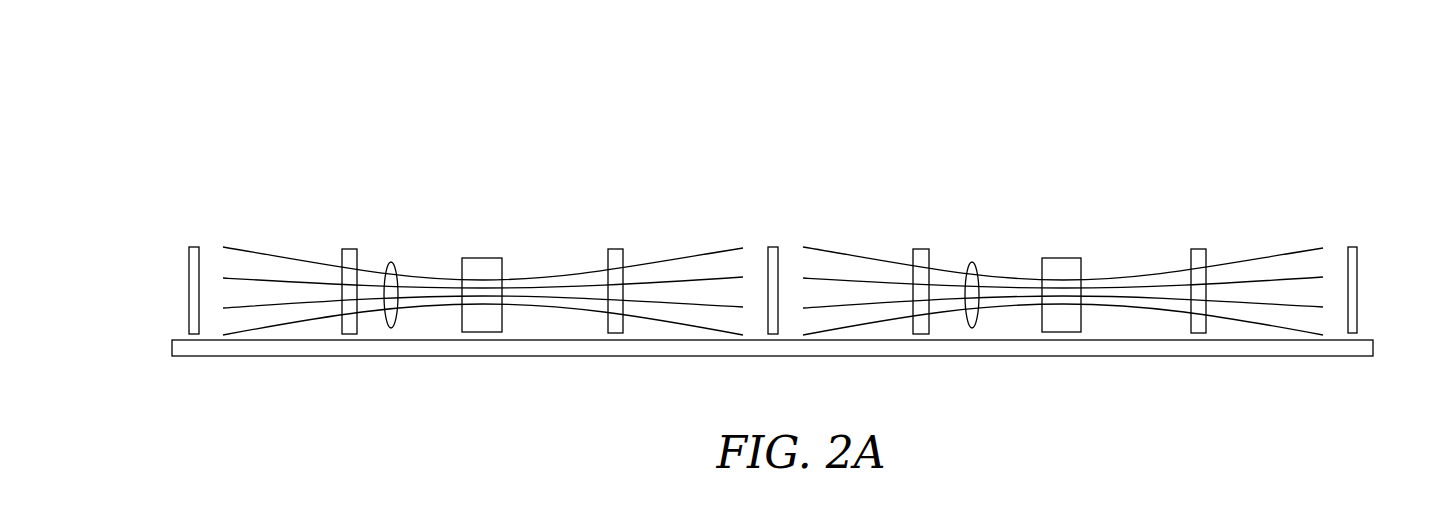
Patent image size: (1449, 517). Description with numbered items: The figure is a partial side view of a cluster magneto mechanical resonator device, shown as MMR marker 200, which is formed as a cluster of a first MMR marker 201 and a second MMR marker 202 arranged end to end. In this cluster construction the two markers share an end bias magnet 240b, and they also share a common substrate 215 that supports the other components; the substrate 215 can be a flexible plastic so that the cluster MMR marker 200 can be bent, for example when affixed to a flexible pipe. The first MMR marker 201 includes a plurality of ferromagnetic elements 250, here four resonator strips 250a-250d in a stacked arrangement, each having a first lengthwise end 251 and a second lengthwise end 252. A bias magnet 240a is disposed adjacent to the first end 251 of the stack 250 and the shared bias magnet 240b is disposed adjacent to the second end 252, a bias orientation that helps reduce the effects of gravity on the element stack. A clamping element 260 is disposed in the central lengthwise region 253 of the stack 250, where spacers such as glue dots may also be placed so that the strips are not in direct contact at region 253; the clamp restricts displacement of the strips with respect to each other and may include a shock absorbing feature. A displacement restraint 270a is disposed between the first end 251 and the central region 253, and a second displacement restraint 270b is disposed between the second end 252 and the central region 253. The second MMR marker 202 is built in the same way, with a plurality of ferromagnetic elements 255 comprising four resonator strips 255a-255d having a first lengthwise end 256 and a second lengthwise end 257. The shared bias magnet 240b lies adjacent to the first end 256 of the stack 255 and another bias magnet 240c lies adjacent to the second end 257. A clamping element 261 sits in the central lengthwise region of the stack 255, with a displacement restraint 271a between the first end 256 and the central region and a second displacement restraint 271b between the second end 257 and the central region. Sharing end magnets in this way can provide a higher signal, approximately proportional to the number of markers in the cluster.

The MMR marker 200 is at (1332, 116).
The first MMR marker 201 is at (688, 174).
The second MMR marker 202 is at (1261, 177).
The common substrate 215 is at (248, 345).
The bias magnet 240a is at (188, 277).
The bias magnet 240b is at (767, 315).
The bias magnet 240c is at (1358, 277).
The ferromagnetic elements 250 is at (482, 269).
The resonator strips 250a-250d is at (391, 328).
The first lengthwise end 251 is at (268, 254).
The second lengthwise end 252 is at (697, 259).
The central lengthwise region 253 is at (507, 259).
The ferromagnetic elements 255 is at (1062, 265).
The resonator strips 255a-255d is at (972, 328).
The first lengthwise end 256 is at (849, 258).
The second lengthwise end 257 is at (1278, 259).
The clamping element 260 is at (478, 258).
The clamping element 261 is at (1048, 258).
The displacement restraint 270a is at (347, 249).
The second displacement restraint 270b is at (615, 249).
The displacement restraint 271a is at (921, 249).
The second displacement restraint 271b is at (1198, 249).